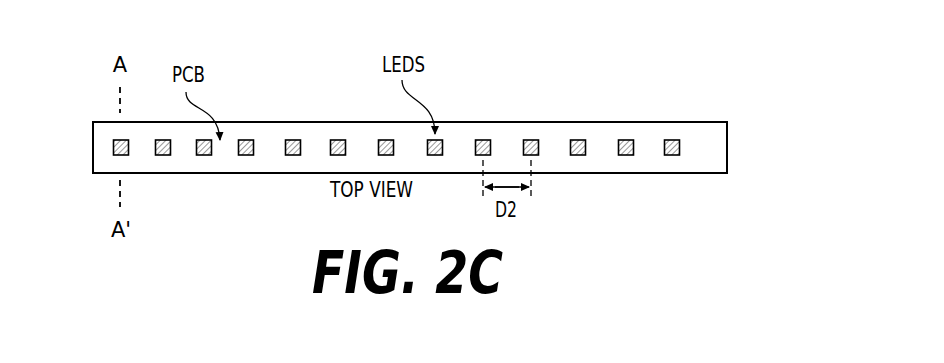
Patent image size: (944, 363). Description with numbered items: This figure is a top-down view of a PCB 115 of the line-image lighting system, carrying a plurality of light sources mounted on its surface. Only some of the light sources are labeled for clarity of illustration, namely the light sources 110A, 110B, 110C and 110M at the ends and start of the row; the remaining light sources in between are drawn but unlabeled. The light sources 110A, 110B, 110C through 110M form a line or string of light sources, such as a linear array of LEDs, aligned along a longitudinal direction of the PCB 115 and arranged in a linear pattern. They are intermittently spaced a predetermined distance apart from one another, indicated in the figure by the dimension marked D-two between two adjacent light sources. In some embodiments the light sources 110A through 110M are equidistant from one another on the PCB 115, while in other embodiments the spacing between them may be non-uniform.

The light source 110A is at (120, 154).
The light source 110B is at (164, 154).
The light source 110C is at (208, 154).
The light source 110M is at (673, 154).
The PCB 115 is at (722, 148).